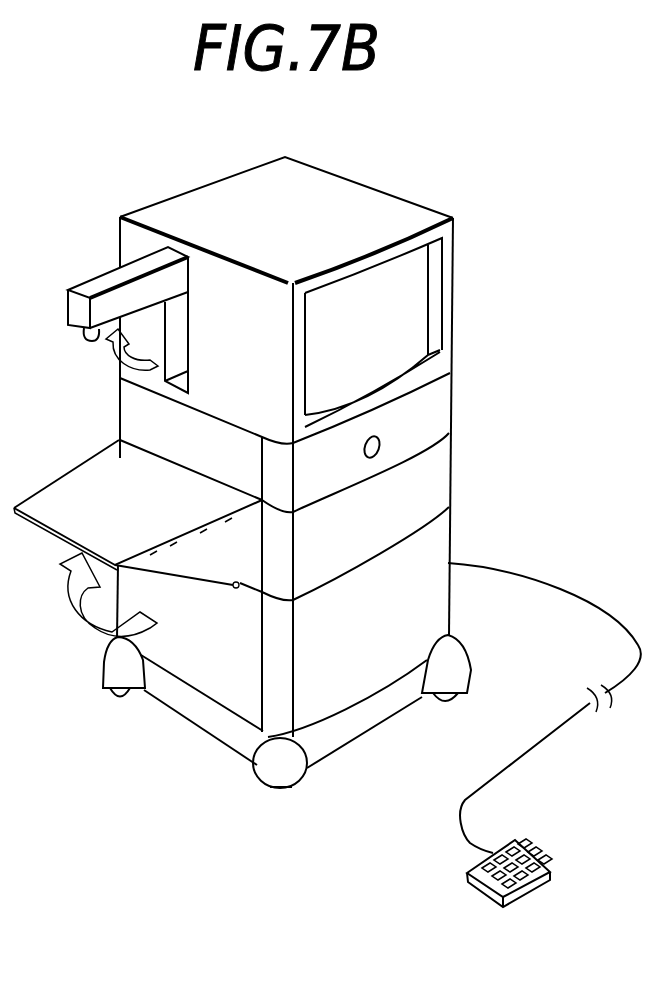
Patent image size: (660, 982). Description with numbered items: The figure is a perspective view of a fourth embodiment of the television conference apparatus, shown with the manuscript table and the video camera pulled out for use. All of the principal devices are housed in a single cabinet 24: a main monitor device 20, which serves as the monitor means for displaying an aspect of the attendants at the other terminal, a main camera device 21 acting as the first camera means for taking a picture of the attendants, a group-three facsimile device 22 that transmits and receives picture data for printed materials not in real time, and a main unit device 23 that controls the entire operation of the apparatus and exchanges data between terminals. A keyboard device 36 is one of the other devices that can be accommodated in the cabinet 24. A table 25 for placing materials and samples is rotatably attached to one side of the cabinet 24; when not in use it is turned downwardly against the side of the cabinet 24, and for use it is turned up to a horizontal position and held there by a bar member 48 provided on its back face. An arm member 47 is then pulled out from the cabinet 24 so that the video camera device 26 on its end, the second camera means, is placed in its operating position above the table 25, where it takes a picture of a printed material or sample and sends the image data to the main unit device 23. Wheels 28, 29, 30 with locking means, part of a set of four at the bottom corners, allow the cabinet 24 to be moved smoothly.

The cabinet 24 is at (403, 198).
The main monitor device 20 is at (413, 332).
The main camera device 21 is at (380, 437).
The group 3 facsimile device 22 is at (430, 496).
The main unit device 23 is at (430, 554).
The arm member 47 is at (92, 288).
The video camera device 26 is at (89, 342).
The table 25 is at (60, 497).
The bar member 48 is at (187, 579).
The wheel 28 is at (122, 703).
The wheel 29 is at (290, 790).
The wheel 30 is at (443, 708).
The keyboard device 36 is at (530, 852).